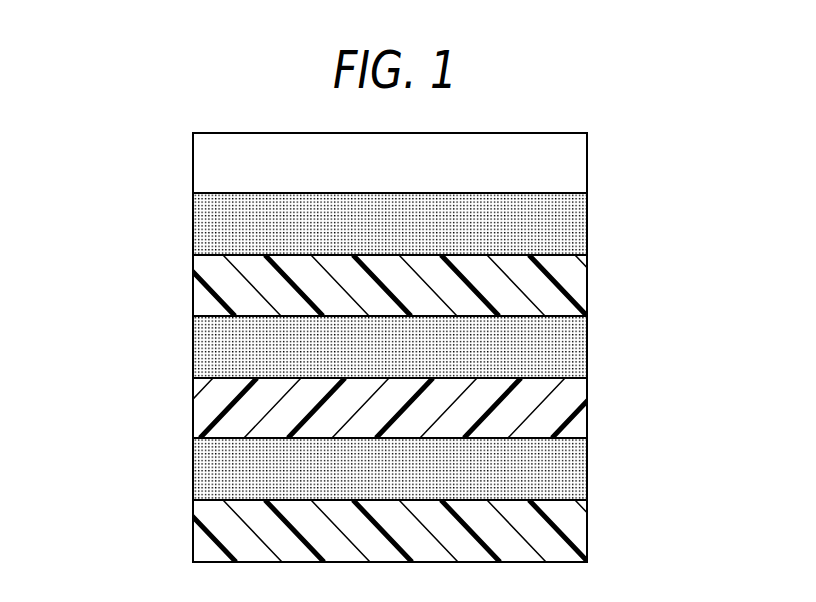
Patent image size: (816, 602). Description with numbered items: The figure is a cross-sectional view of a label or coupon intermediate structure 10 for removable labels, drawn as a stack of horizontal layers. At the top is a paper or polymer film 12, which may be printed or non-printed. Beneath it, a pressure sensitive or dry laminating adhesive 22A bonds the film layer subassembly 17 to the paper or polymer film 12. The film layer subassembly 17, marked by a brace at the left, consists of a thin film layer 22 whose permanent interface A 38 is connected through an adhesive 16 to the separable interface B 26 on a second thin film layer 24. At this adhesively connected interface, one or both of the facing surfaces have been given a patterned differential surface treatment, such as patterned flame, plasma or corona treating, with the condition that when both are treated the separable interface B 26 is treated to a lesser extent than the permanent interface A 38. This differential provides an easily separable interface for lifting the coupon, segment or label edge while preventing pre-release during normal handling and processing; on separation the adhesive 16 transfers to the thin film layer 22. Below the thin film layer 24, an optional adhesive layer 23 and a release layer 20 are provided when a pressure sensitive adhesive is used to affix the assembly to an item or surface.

The label or coupon intermediate structure 10 is at (81, 79).
The paper or polymer film 12 is at (588, 162).
The pressure sensitive or dry laminating adhesive 22A is at (588, 227).
The thin film layer 22 is at (588, 290).
The permanent interface A 38 is at (588, 316).
The adhesive 16 is at (590, 338).
The separable interface B 26 is at (590, 378).
The thin film layer 24 is at (590, 410).
The adhesive layer 23 is at (590, 462).
The release layer 20 is at (590, 523).
The film layer subassembly 17 is at (352, 347).